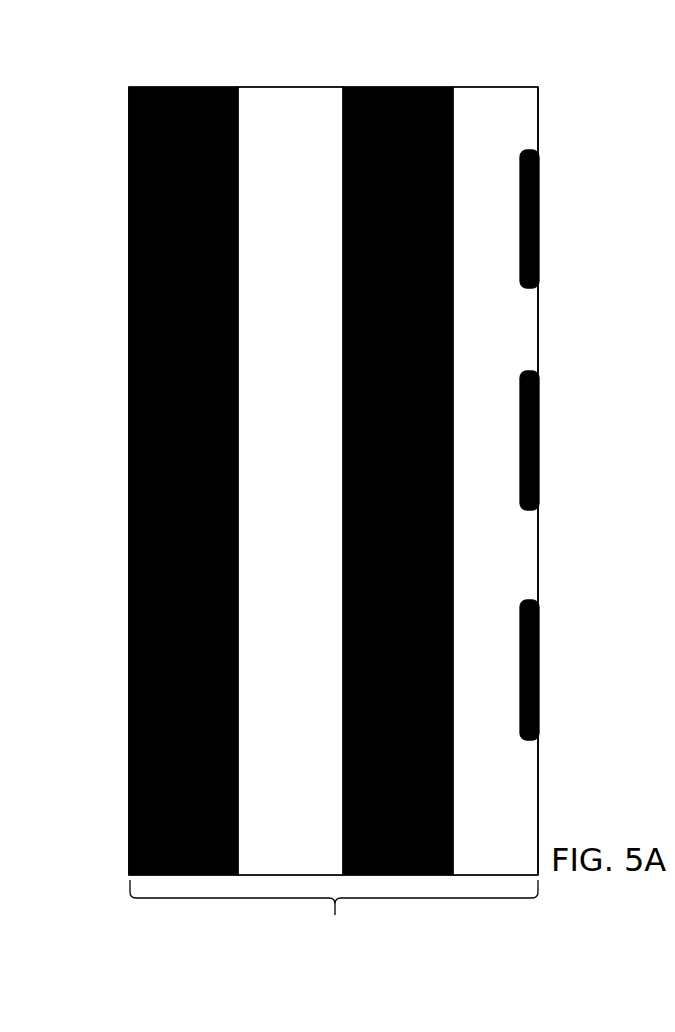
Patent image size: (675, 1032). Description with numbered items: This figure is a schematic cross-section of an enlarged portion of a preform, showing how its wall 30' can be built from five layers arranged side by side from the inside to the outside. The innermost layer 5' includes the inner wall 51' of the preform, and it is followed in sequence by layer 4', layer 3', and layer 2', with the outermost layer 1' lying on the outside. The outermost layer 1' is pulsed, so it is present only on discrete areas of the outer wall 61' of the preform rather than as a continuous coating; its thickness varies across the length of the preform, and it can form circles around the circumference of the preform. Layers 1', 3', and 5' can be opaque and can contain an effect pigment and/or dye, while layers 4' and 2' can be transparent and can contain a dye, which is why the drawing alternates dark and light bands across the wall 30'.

The innermost layer 5' is at (183, 452).
The layer 4' is at (290, 452).
The layer 3' is at (398, 452).
The layer 2' is at (495, 452).
The outermost layer 1' is at (555, 445).
The inner wall 51' is at (100, 481).
The outer wall 61' is at (575, 481).
The wall 30' is at (334, 914).